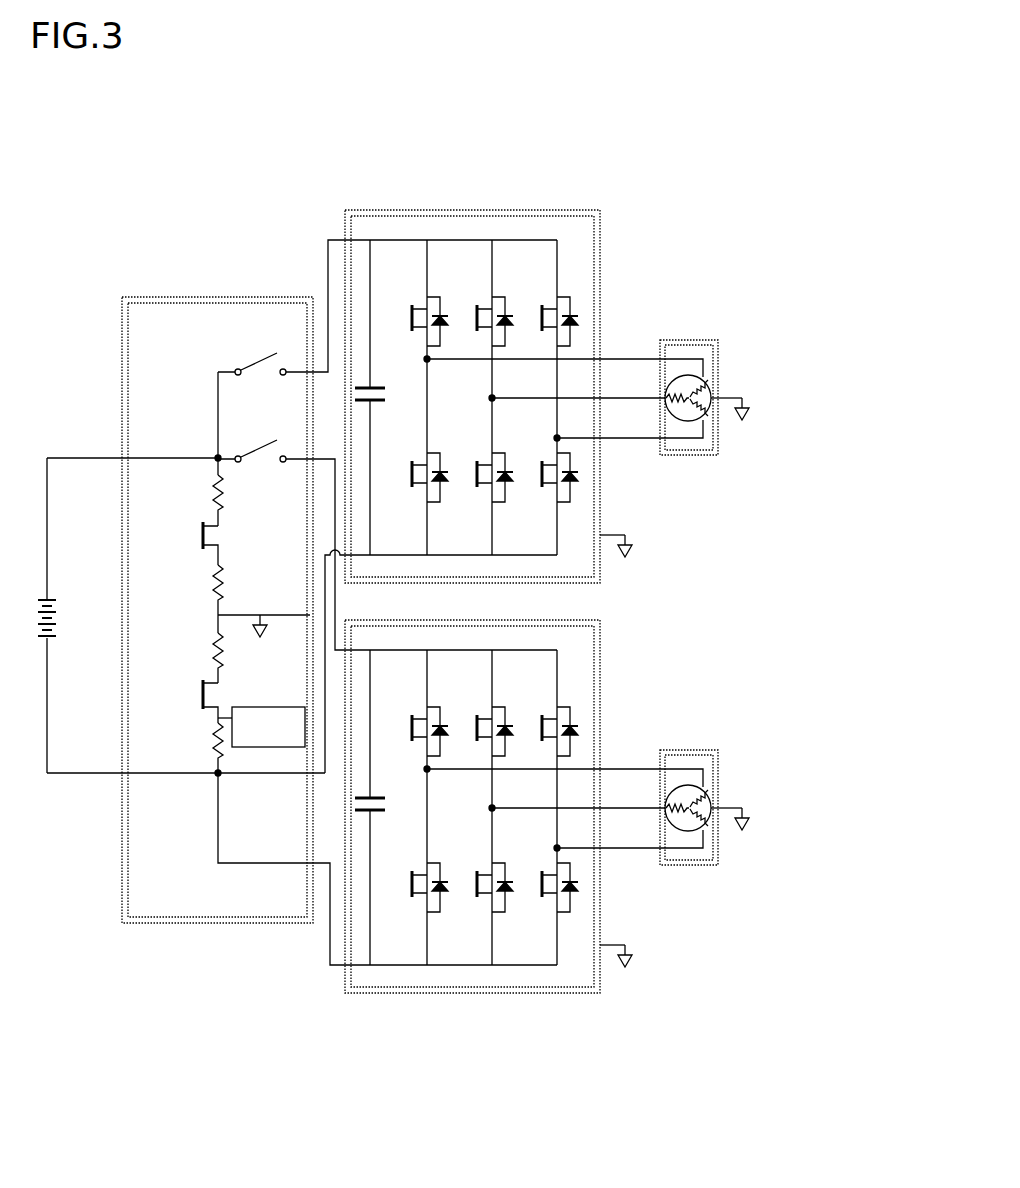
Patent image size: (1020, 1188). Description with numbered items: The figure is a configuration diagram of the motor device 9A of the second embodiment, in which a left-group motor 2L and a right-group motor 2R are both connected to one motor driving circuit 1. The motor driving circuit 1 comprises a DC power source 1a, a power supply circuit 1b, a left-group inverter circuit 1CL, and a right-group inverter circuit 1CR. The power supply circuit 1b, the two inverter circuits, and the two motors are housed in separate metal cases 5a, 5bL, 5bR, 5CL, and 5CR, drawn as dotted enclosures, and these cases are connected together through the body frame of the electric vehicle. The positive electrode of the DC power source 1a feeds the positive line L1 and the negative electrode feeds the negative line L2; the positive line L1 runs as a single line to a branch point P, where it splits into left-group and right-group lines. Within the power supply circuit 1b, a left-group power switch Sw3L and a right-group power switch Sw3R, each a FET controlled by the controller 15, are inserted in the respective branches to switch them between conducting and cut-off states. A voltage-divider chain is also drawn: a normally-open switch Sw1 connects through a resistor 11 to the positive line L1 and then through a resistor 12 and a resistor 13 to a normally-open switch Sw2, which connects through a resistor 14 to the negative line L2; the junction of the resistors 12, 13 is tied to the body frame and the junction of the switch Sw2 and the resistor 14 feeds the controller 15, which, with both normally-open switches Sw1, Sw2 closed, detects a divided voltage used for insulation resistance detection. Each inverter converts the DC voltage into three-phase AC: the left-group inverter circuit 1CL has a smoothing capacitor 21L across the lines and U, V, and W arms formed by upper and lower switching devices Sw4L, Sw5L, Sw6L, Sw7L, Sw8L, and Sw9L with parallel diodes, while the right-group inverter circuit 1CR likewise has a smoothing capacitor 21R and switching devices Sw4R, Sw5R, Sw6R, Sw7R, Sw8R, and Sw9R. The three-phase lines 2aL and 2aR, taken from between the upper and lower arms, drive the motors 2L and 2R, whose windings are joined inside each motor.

The motor device 9A is at (660, 89).
The motor driving circuit 1 is at (585, 156).
The DC power source 1a is at (47, 607).
The power supply circuit 1b is at (302, 281).
The left-group inverter circuit 1CL is at (593, 204).
The right-group inverter circuit 1CR is at (600, 1008).
The metal case 5a is at (122, 346).
The metal case 5bL is at (600, 240).
The metal case 5bR is at (600, 650).
The metal case 5CL is at (699, 344).
The metal case 5CR is at (699, 754).
The three-phase lines 2aL is at (648, 357).
The three-phase lines 2aR is at (648, 767).
The left-group motor 2L is at (688, 421).
The right-group motor 2R is at (688, 831).
The resistor 11 is at (212, 499).
The resistor 12 is at (212, 590).
The resistor 13 is at (212, 656).
The resistor 14 is at (212, 753).
The controller 15 is at (270, 707).
The smoothing capacitor 21L is at (398, 375).
The smoothing capacitor 21R is at (398, 785).
The normally-open switch Sw1 is at (201, 538).
The normally-open switch Sw2 is at (197, 697).
The left-group power switch Sw3L is at (259, 364).
The right-group power switch Sw3R is at (262, 447).
The switching device Sw4L is at (412, 309).
The switching device Sw5L is at (412, 466).
The switching device Sw6L is at (477, 309).
The switching device Sw7L is at (477, 466).
The switching device Sw8L is at (542, 309).
The switching device Sw9L is at (544, 466).
The switching device Sw4R is at (412, 719).
The switching device Sw5R is at (412, 876).
The switching device Sw6R is at (477, 719).
The switching device Sw7R is at (477, 876).
The switching device Sw8R is at (542, 719).
The switching device Sw9R is at (544, 876).
The branch point P is at (217, 457).
The positive line L1 is at (62, 456).
The negative line L2 is at (73, 771).